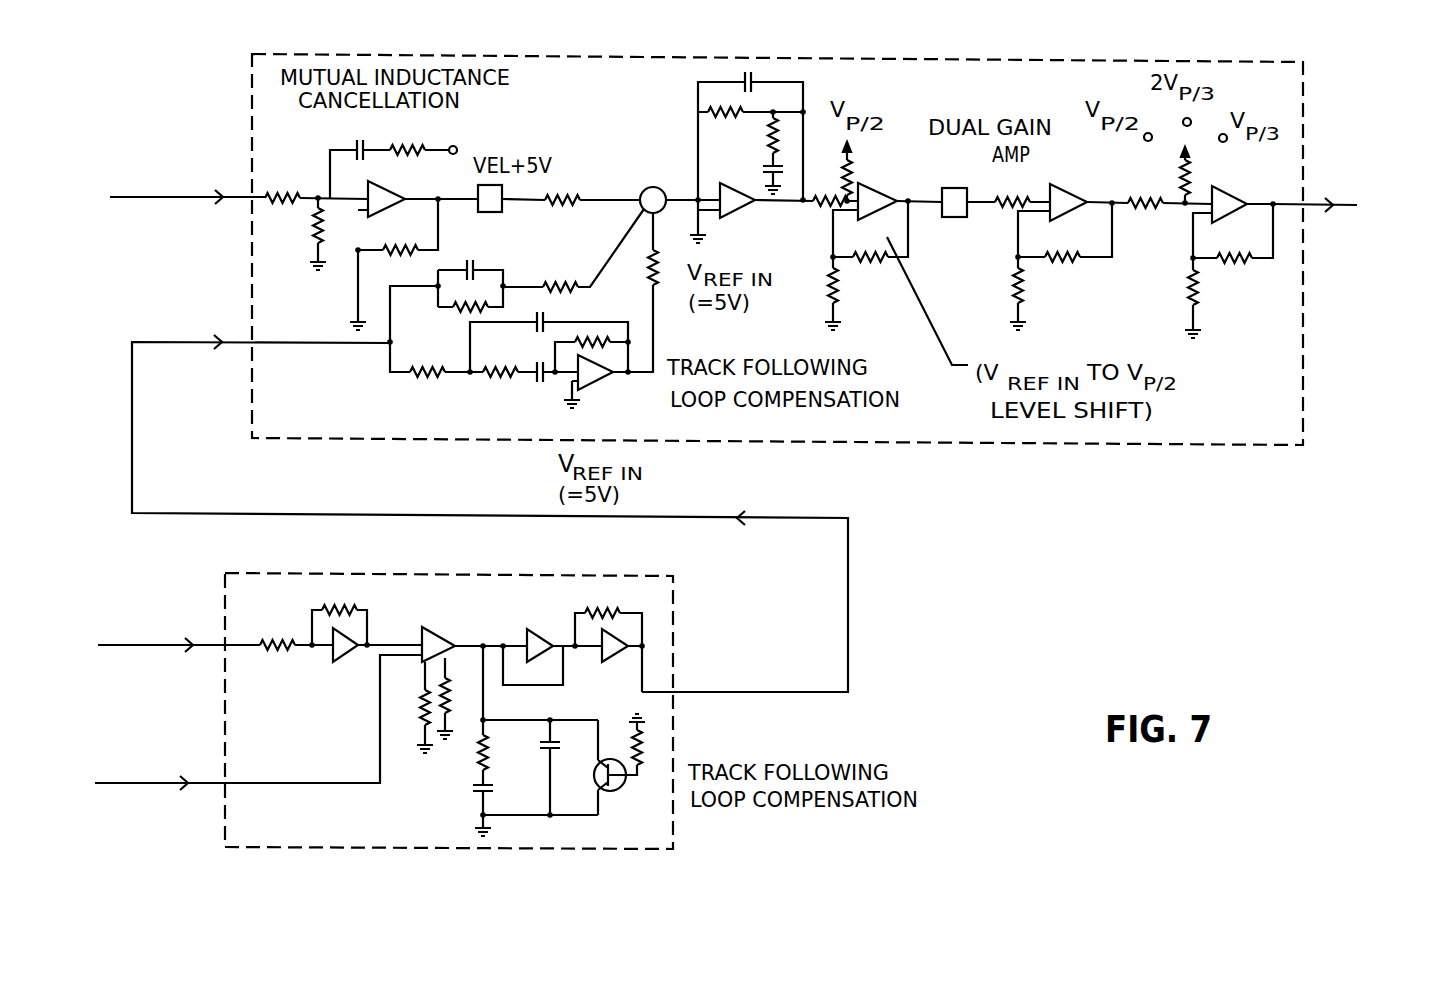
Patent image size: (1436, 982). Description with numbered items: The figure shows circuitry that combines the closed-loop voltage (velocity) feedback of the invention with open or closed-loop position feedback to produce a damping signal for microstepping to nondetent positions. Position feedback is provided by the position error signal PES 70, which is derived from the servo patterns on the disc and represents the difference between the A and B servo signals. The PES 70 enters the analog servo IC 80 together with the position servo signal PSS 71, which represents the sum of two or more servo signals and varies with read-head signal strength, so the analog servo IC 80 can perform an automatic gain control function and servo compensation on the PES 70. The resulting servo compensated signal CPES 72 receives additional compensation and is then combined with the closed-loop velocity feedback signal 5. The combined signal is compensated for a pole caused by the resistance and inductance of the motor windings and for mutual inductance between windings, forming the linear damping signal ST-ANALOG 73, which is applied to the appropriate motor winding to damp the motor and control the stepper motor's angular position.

The velocity signal 5 is at (186, 198).
The ST-ANALOG signal 73 is at (927, 174).
The CPES signal 72 is at (490, 513).
The analog servo IC 80 is at (449, 694).
The position error signal (PES) 70 is at (177, 632).
The position servo signal (PSS) 71 is at (258, 722).